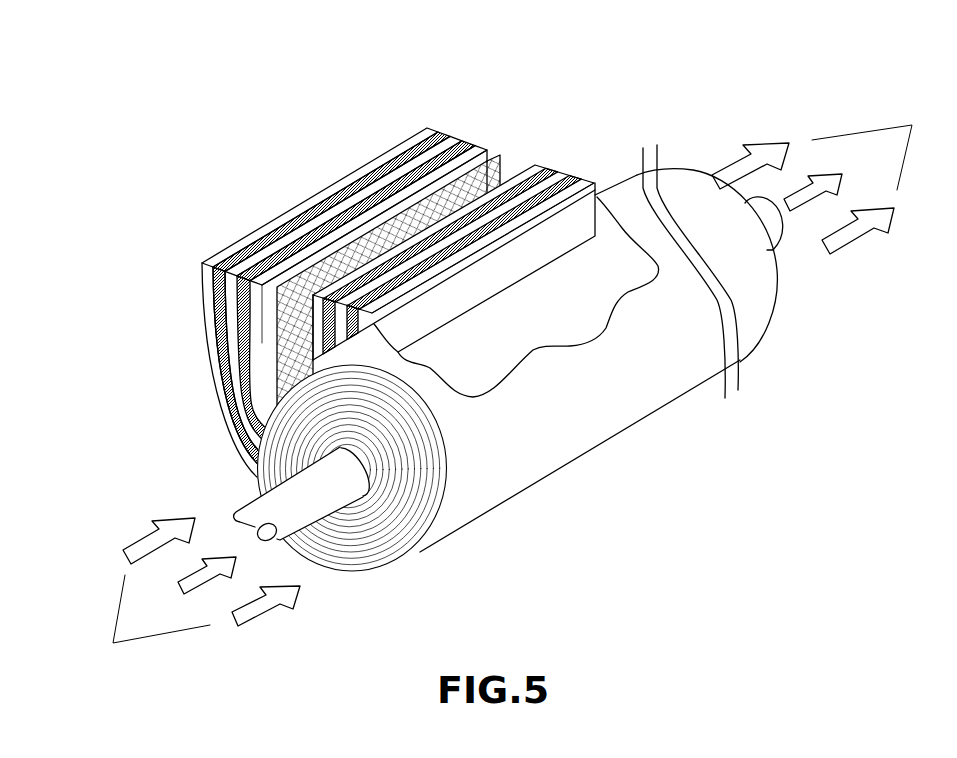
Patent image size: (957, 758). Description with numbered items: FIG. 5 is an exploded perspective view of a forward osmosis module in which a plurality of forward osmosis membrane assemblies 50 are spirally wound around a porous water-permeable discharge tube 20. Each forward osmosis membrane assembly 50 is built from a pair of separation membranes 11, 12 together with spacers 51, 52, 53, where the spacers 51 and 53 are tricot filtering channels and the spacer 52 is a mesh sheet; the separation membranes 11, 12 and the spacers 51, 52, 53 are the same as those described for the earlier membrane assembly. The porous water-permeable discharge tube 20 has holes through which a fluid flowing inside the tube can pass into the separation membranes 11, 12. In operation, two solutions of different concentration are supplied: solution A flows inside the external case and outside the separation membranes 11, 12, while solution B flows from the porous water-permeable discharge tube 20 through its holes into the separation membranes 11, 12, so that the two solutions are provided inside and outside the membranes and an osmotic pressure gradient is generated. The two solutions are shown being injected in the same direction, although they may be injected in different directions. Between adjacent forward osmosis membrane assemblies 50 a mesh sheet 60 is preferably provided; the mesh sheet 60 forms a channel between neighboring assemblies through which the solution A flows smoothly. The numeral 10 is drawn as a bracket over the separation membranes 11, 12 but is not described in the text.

The electrode assembly 10 is at (240, 151).
The separation membrane 11 is at (228, 250).
The separation membrane 12 is at (291, 257).
The porous water-permeable discharge tube 20 is at (308, 512).
The forward osmosis membrane assembly 50 is at (523, 68).
The tricot filtering channel 51 is at (442, 137).
The mesh sheet 52 is at (452, 140).
The tricot filtering channel 53 is at (463, 147).
The mesh sheet 60 is at (500, 163).